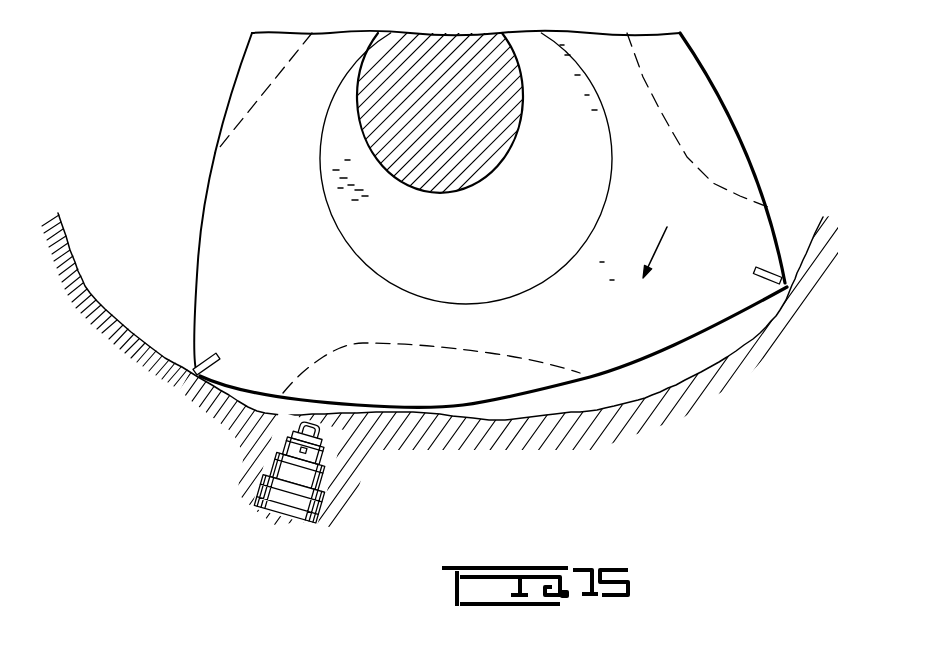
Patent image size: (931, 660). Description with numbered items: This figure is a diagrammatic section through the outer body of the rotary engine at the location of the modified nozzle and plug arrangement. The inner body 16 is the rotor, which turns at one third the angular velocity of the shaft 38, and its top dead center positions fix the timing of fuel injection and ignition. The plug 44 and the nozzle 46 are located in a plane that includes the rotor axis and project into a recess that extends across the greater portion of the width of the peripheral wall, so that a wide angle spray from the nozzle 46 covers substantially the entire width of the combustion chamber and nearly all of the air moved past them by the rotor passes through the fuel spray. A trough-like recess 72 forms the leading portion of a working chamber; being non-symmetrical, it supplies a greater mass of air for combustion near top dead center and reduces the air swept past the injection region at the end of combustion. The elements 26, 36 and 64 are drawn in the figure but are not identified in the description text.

The inner body 16 is at (738, 138).
The support surface 26 is at (675, 384).
The formed region 36 is at (464, 257).
The shaft 38 is at (505, 153).
The plug 44 is at (327, 508).
The nozzle 46 is at (262, 506).
The cavity wall 64 is at (340, 425).
The trough-like recess 72 is at (236, 131).